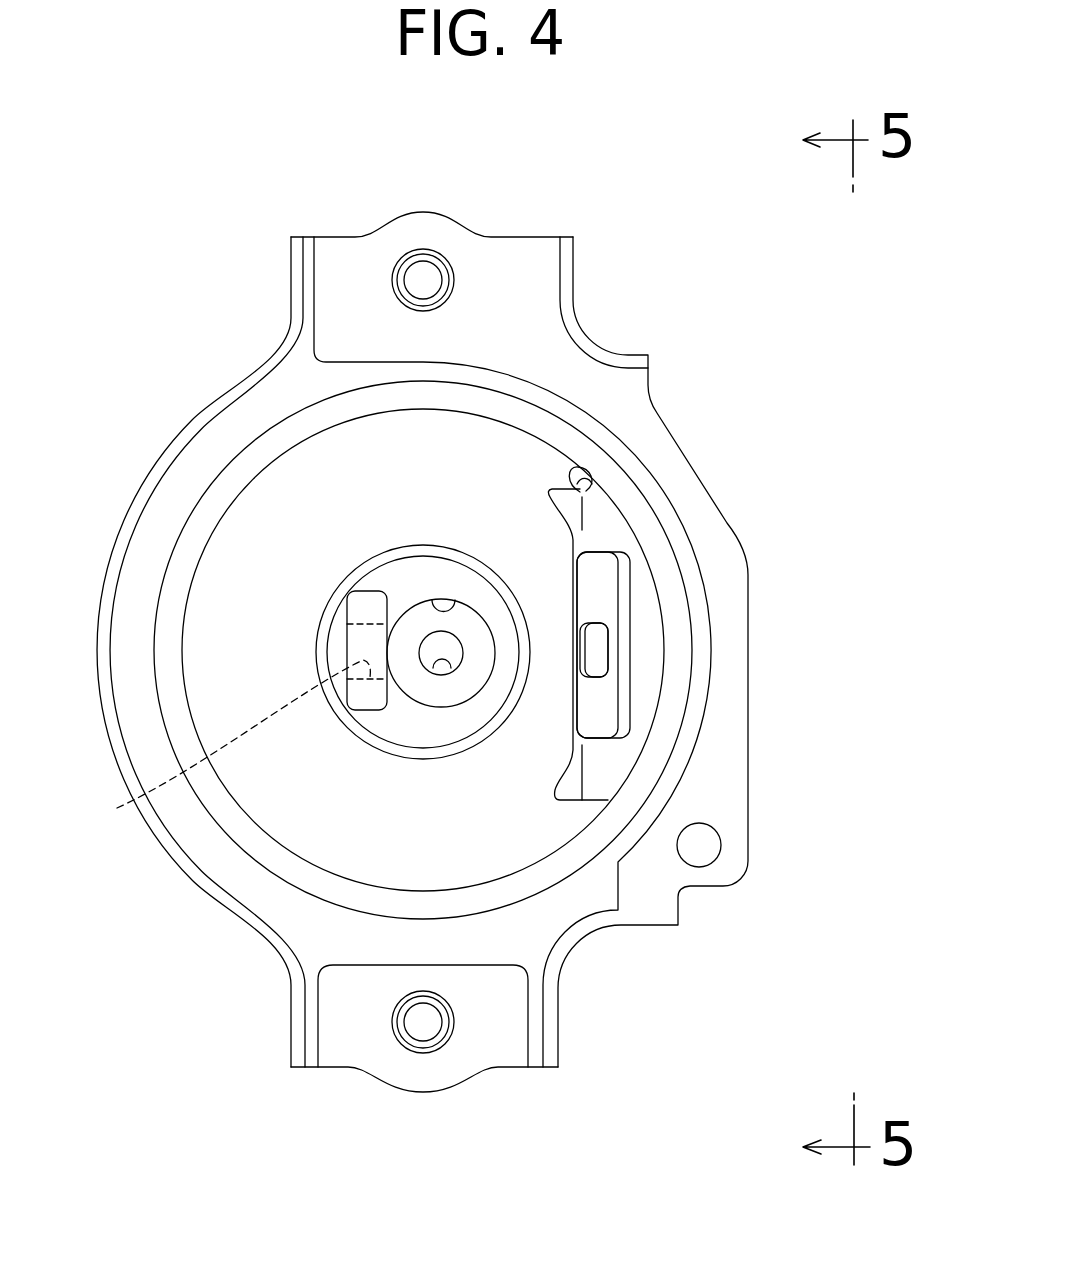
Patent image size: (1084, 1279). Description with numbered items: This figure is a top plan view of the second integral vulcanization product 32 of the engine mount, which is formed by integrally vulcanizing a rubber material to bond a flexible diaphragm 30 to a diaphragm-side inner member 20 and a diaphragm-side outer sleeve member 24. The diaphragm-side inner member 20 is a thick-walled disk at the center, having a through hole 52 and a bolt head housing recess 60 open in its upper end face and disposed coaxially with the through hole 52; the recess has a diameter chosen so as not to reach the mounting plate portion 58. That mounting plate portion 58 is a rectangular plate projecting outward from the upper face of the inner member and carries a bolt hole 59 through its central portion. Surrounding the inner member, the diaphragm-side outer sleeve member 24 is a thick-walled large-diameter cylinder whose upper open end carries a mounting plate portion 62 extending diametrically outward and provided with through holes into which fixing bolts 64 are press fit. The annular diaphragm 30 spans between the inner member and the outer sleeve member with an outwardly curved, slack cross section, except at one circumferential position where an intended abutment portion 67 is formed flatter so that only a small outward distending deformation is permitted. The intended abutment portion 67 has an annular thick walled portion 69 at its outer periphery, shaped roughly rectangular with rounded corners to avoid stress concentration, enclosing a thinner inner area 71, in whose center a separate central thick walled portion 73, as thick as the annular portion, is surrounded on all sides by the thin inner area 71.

The diaphragm-side inner member 20 is at (392, 725).
The diaphragm-side outer sleeve member 24 is at (723, 728).
The flexible diaphragm 30 is at (253, 503).
The second integral vulcanization product 32 is at (672, 319).
The through hole 52 is at (457, 665).
The mounting plate portion 58 is at (358, 610).
The bolt hole 59 is at (228, 744).
The bolt head housing recess 60 is at (457, 602).
The mounting plate portion 62 is at (337, 1011).
The fixing bolt 64 is at (424, 273).
The intended abutment portion 67 is at (652, 640).
The annular thick walled portion 69 is at (615, 770).
The inner area 71 is at (598, 577).
The central thick walled portion 73 is at (598, 662).